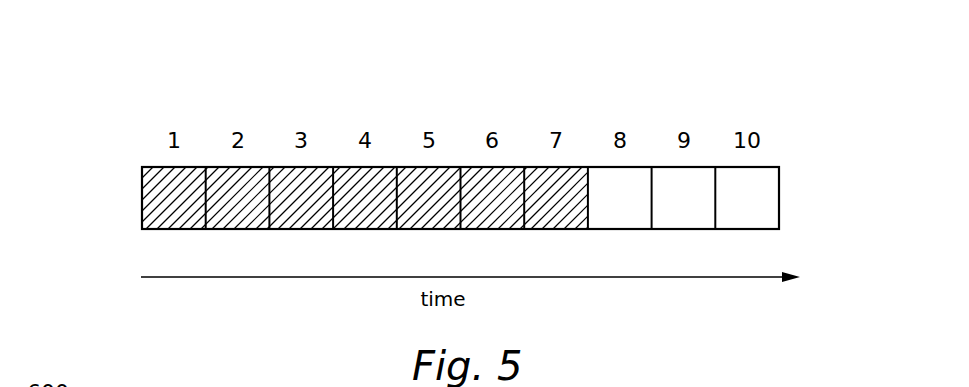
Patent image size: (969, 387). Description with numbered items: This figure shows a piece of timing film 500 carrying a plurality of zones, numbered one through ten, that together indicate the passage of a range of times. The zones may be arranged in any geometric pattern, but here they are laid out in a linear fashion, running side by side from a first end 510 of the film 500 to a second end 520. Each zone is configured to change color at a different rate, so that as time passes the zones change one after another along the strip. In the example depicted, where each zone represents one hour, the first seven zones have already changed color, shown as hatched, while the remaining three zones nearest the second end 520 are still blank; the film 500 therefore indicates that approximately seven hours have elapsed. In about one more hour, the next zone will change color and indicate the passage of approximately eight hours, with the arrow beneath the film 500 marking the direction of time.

The film 500 is at (116, 80).
The first end 510 is at (142, 185).
The second end 520 is at (779, 198).